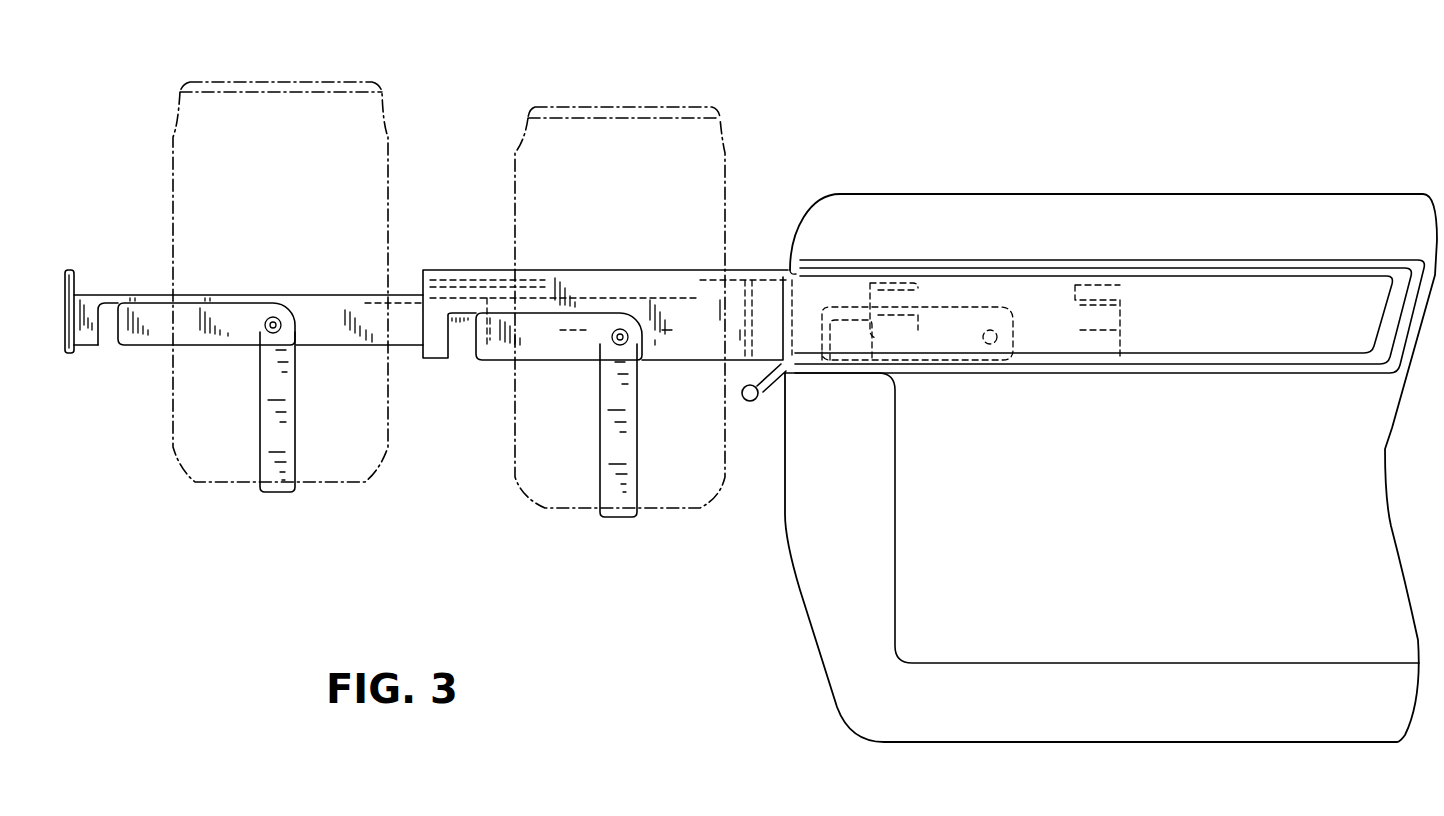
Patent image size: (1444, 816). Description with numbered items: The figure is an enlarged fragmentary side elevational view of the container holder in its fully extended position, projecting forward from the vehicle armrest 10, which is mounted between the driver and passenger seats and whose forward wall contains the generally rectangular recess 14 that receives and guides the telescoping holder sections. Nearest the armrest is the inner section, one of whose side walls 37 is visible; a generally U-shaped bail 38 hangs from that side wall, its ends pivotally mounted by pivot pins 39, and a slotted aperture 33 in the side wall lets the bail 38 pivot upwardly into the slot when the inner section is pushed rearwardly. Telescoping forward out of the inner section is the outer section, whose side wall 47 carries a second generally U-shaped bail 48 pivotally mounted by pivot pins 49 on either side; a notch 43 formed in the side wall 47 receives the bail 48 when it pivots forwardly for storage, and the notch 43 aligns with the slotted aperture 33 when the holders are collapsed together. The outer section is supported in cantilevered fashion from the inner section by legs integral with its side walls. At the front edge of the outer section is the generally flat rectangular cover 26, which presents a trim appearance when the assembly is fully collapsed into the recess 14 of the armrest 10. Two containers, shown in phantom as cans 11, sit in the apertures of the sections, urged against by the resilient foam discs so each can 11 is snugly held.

The vehicle armrest 10 is at (1025, 182).
The can 11 is at (390, 194).
The recess 14 is at (1208, 276).
The cover 26 is at (72, 347).
The slotted aperture 33 is at (447, 345).
The side wall 37 is at (716, 335).
The bail 38 is at (620, 510).
The pivot pin 39 is at (616, 344).
The notch 43 is at (110, 336).
The side wall 47 is at (343, 335).
The bail 48 is at (272, 485).
The pivot pin 49 is at (271, 333).